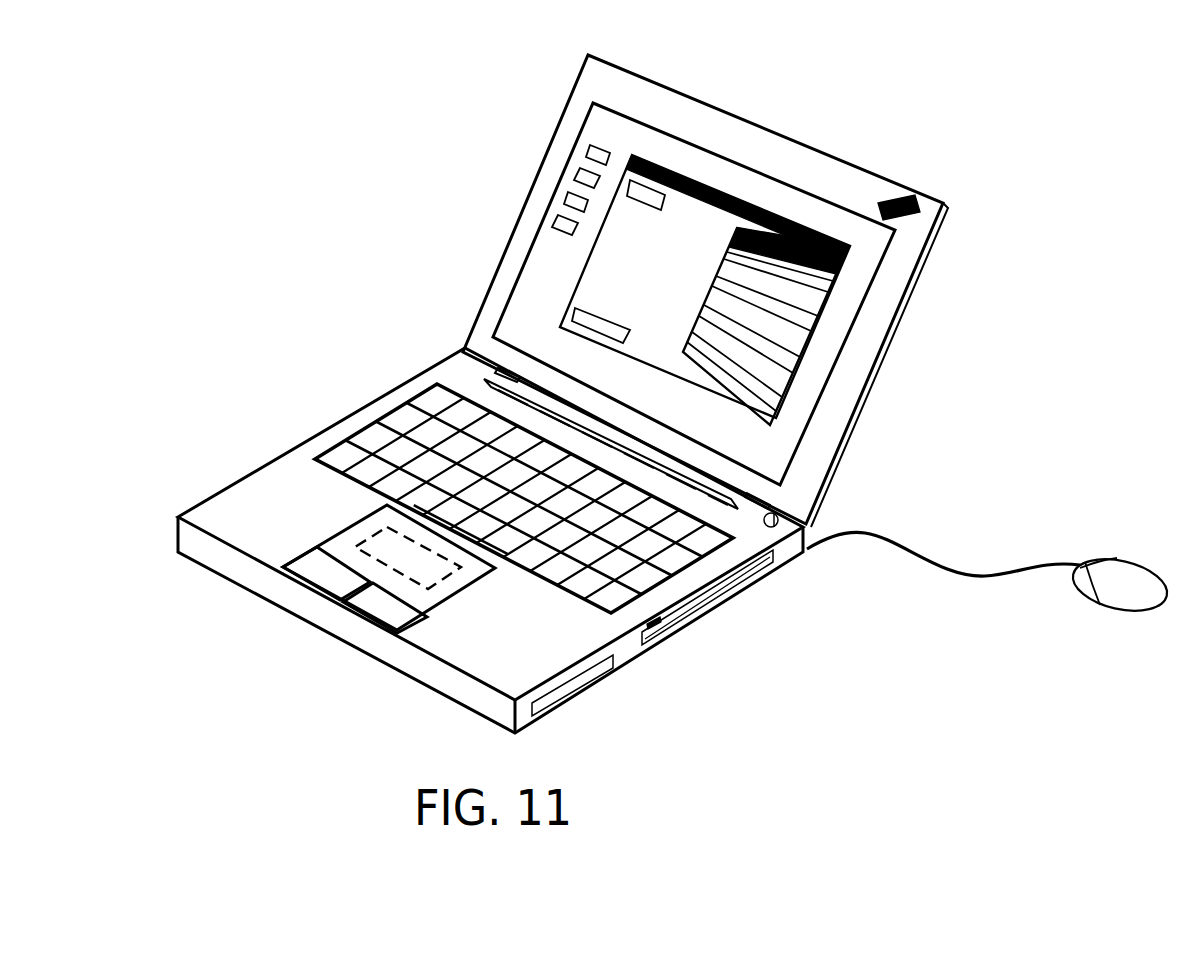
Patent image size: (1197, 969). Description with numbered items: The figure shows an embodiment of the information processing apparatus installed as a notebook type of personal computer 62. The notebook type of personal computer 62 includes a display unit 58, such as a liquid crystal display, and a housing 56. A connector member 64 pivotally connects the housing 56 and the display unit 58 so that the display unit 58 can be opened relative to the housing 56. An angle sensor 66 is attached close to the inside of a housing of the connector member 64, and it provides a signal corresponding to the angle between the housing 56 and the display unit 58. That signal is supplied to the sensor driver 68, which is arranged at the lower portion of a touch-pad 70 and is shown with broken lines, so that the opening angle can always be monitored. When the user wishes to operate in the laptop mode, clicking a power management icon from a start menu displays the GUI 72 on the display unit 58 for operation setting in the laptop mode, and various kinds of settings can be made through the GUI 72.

The housing 56 is at (243, 513).
The display unit 58 is at (725, 291).
The notebook type of personal computer 62 is at (675, 386).
The connector member 64 is at (505, 370).
The angle sensor 66 is at (778, 530).
The sensor driver 68 is at (433, 574).
The touch-pad 70 is at (395, 553).
The GUI 72 is at (598, 278).